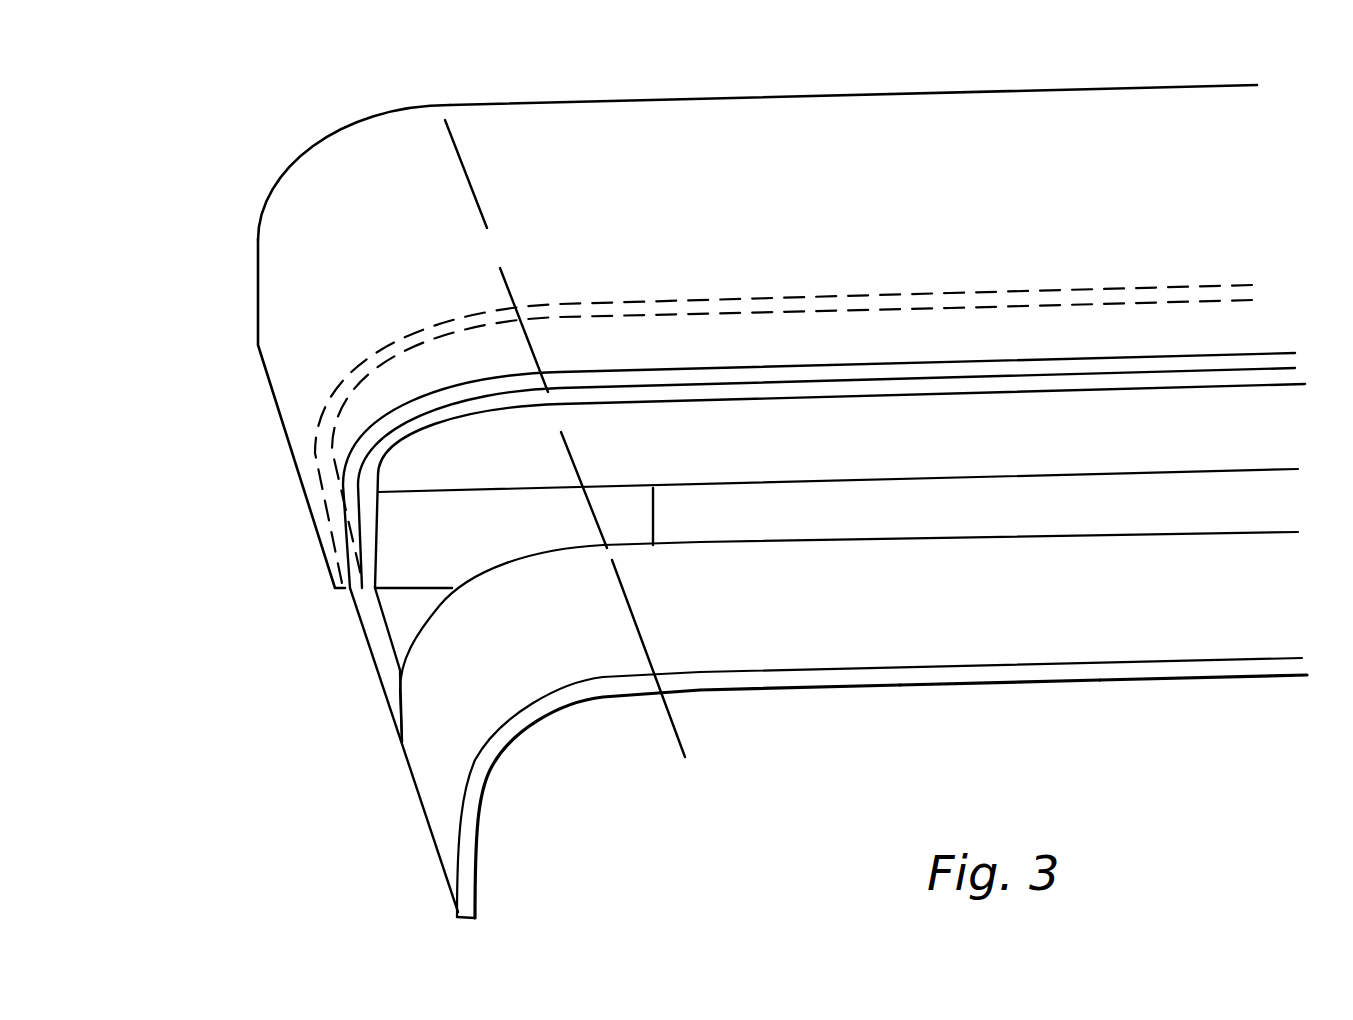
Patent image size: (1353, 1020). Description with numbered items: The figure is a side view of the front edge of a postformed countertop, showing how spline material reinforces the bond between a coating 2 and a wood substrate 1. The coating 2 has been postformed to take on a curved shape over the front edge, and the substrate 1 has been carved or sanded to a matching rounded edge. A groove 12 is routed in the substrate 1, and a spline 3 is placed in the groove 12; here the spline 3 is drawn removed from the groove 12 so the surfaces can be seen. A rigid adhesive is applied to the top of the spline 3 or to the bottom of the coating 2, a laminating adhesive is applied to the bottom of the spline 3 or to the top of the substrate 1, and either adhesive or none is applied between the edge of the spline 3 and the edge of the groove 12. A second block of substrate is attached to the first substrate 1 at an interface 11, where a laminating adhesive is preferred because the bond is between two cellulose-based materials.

The substrate 1 is at (1020, 468).
The coating 2 is at (912, 125).
The spline material 3 is at (813, 653).
The interface 11 is at (550, 489).
The groove 12 is at (885, 388).